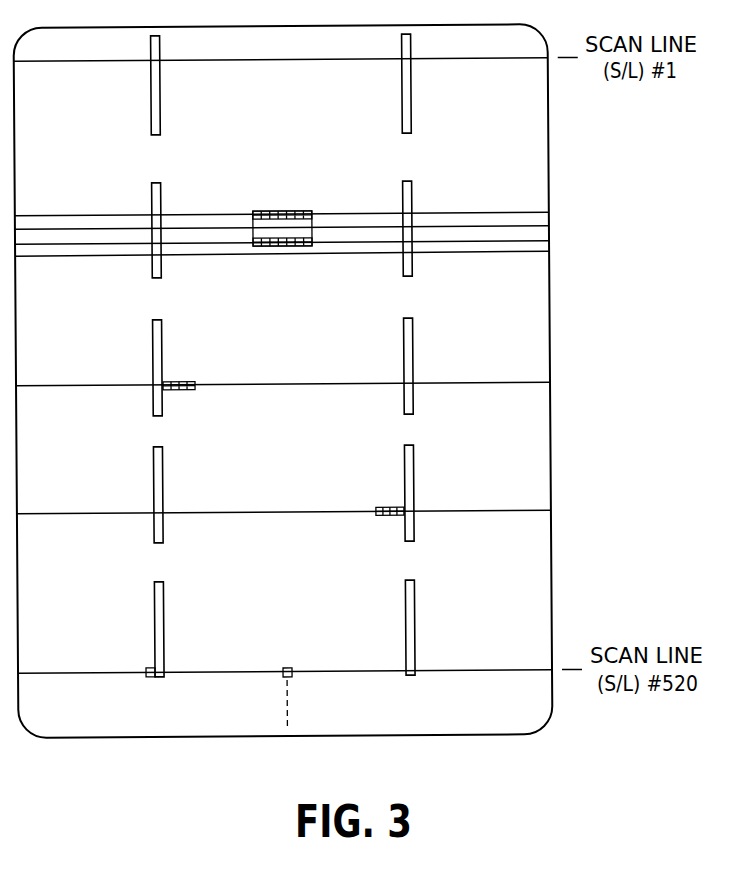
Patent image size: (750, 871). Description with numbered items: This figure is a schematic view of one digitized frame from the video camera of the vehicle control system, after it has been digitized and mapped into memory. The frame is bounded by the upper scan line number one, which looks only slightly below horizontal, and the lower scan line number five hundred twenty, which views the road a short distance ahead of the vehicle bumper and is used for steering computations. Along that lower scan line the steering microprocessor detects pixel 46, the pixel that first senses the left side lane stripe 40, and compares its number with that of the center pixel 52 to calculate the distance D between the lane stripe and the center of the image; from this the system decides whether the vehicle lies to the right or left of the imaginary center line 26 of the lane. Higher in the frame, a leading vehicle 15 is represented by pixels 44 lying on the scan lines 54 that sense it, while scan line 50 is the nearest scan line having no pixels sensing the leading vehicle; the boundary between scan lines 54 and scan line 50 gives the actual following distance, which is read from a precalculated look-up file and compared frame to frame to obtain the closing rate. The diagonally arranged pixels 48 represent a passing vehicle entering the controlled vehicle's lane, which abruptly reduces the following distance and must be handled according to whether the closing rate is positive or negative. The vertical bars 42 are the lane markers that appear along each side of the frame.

The leading vehicle 15 is at (314, 231).
The imaginary center line 26 is at (289, 703).
The left side lane stripe 40 is at (163, 603).
The lane marker bars 42 is at (413, 429).
The pixels 44 is at (282, 247).
The pixel 46 is at (150, 677).
The pixels 48 is at (398, 509).
The scan line 50 is at (89, 254).
The center pixel 52 is at (288, 667).
The scan lines 54 is at (477, 243).